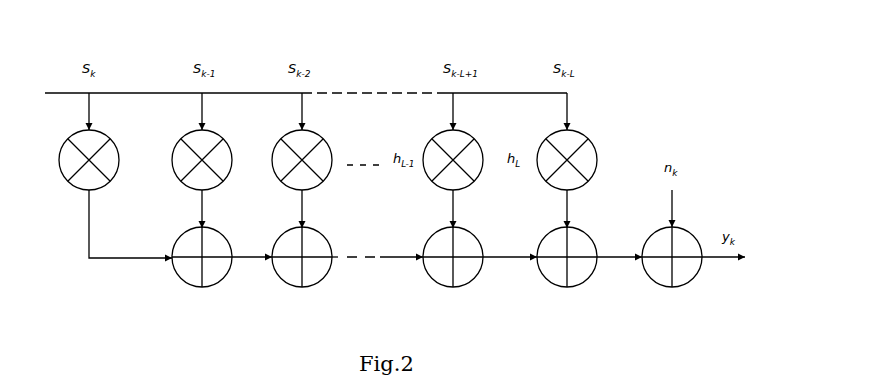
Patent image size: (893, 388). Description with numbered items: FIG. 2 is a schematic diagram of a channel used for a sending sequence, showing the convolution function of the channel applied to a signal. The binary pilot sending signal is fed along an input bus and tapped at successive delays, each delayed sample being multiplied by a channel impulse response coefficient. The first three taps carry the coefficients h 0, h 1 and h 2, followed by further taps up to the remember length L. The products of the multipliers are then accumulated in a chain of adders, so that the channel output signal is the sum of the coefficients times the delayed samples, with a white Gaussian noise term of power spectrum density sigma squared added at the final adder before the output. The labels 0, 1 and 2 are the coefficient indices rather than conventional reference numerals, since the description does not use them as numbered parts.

The tap coefficient multiplier h0 0 is at (78, 160).
The tap coefficient multiplier h1 1 is at (191, 160).
The tap coefficient multiplier h2 2 is at (289, 160).